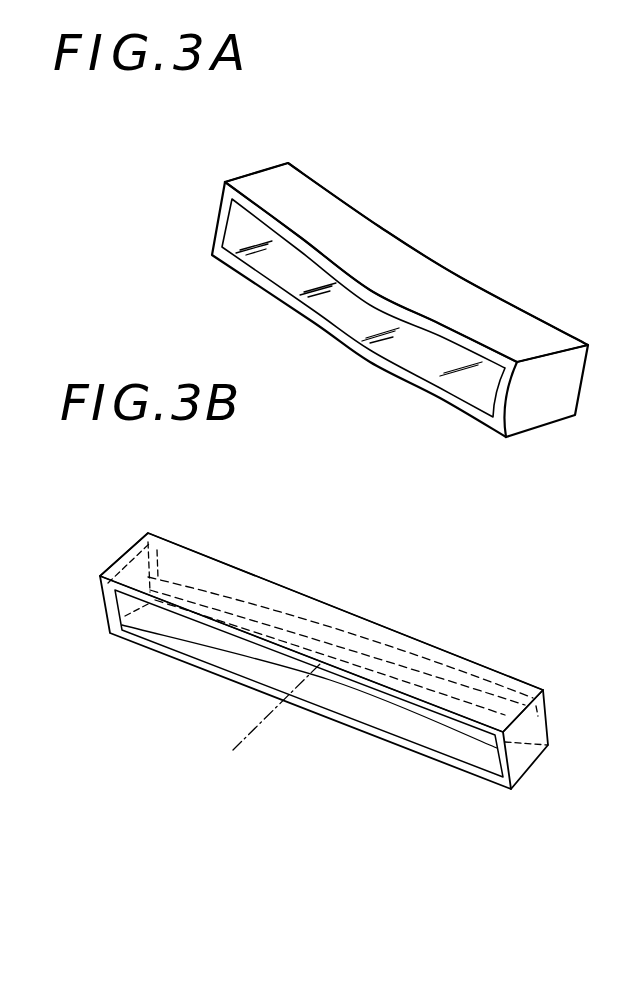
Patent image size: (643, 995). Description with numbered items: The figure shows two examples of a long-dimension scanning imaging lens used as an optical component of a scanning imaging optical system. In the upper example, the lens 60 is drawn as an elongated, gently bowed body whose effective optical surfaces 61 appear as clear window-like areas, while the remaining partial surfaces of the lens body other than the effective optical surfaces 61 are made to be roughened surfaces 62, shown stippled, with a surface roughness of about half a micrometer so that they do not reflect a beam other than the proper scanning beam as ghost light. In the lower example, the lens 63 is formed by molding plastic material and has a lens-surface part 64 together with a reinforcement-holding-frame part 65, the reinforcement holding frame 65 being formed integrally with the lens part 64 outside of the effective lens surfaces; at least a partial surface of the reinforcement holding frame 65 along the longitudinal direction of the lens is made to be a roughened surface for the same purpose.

In FIG. 3A, the lens 60 is at (497, 285).
In FIG. 3A, the effective optical surfaces 61 is at (335, 302).
In FIG. 3A, the roughened surfaces 62 is at (376, 238).
In FIG. 3B, the lens 63 is at (365, 603).
In FIG. 3B, the lens-surface part 64 is at (163, 622).
In FIG. 3B, the reinforcement-holding-frame part 65 is at (178, 553).